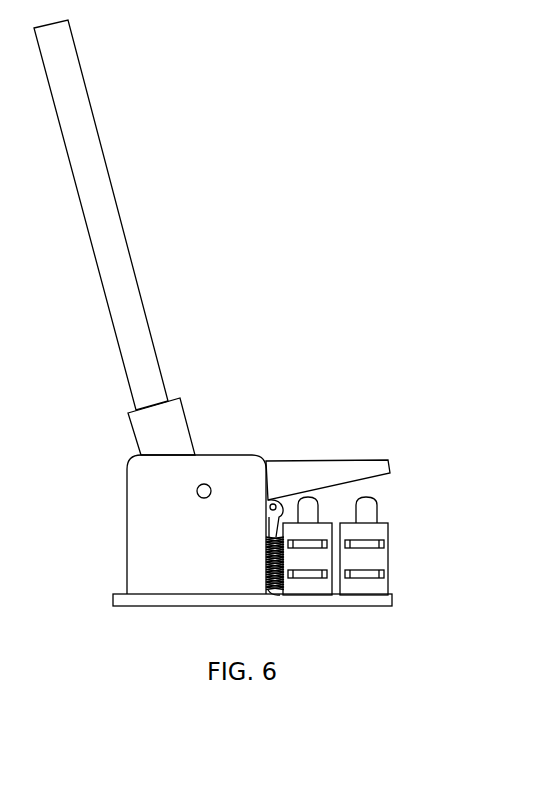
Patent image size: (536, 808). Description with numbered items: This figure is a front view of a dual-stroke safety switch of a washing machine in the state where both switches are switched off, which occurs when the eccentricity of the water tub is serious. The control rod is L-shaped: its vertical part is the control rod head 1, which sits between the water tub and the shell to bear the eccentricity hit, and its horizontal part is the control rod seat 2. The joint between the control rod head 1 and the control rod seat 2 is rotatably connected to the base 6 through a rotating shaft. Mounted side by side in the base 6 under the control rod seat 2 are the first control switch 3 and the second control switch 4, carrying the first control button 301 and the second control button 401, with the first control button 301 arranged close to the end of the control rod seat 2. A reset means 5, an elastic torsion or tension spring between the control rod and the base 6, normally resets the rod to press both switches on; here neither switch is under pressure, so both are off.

The control rod head 1 is at (140, 215).
The control rod seat 2 is at (359, 456).
The first control switch 3 is at (372, 580).
The second control switch 4 is at (318, 580).
The reset means 5 is at (293, 587).
The base 6 is at (252, 519).
The first control button 301 is at (404, 483).
The second control button 401 is at (375, 466).